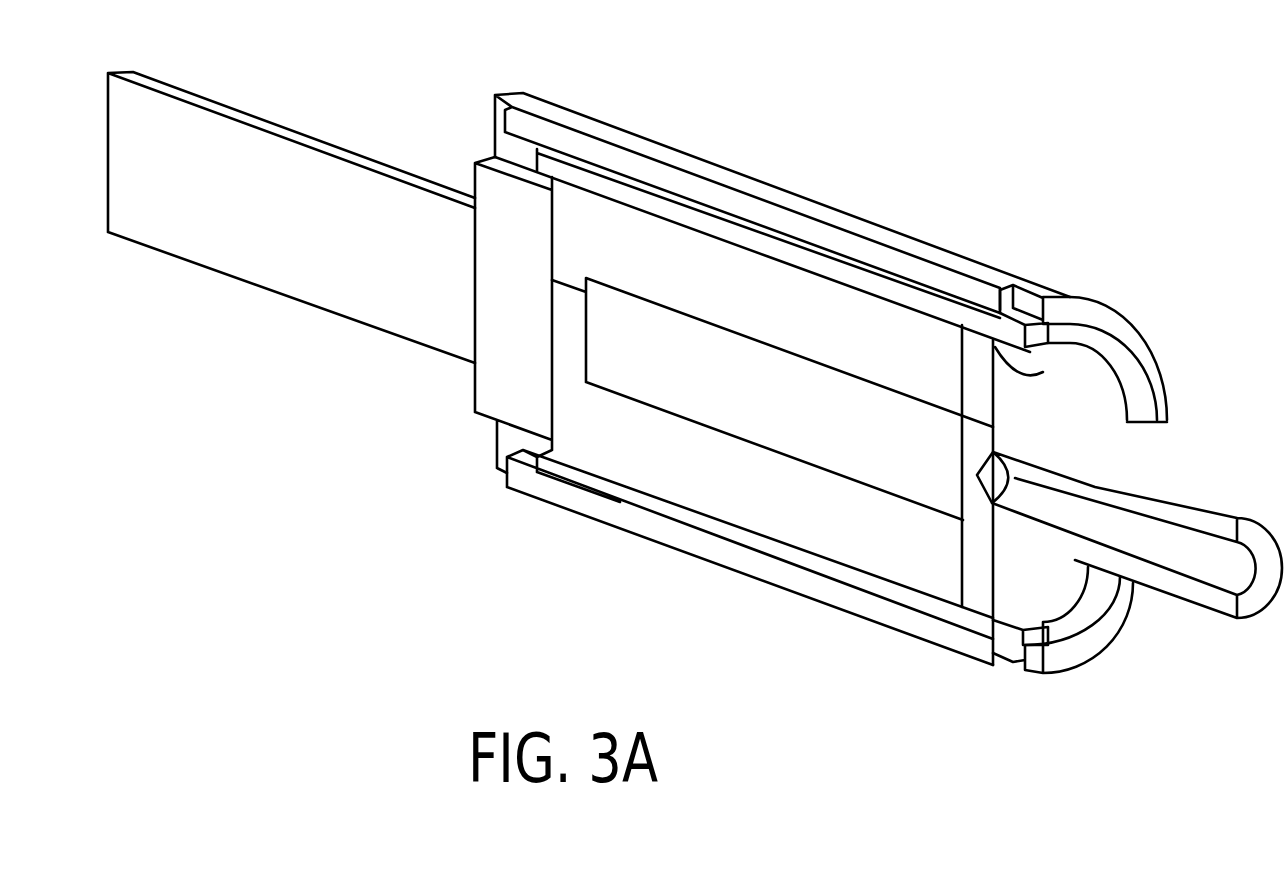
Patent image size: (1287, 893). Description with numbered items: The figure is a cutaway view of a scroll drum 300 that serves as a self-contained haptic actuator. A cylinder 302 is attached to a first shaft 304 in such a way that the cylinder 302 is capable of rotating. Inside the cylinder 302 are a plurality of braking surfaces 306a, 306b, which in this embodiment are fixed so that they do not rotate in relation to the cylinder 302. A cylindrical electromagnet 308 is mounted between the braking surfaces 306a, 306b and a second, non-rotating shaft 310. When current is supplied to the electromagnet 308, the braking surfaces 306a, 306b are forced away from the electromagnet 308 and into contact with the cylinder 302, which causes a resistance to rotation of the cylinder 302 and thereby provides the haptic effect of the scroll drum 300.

The scroll drum 300 is at (970, 164).
The cylinder 302 is at (795, 200).
The first shaft 304 is at (1232, 510).
The braking surface 306a is at (967, 313).
The braking surface 306b is at (1000, 628).
The cylindrical electromagnet 308 is at (815, 513).
The second, non-rotating shaft 310 is at (290, 137).